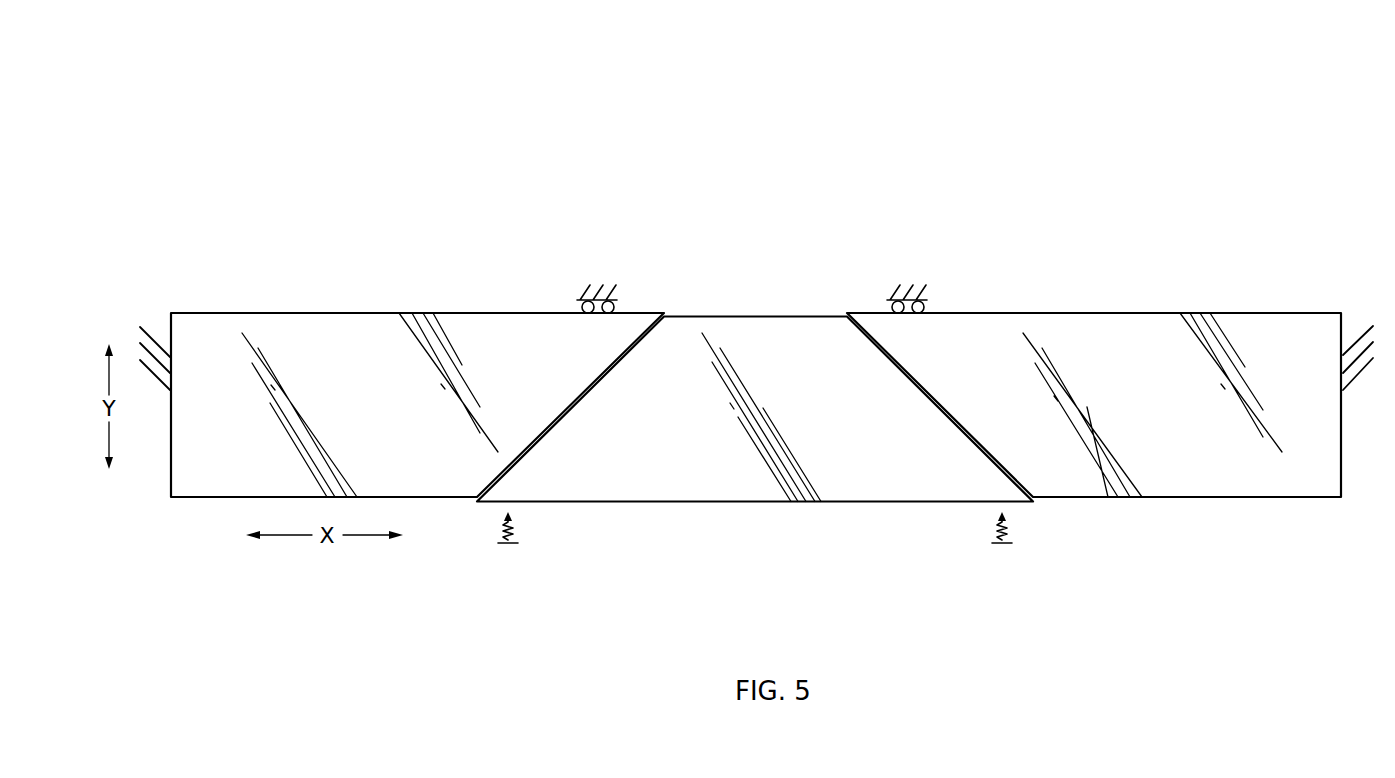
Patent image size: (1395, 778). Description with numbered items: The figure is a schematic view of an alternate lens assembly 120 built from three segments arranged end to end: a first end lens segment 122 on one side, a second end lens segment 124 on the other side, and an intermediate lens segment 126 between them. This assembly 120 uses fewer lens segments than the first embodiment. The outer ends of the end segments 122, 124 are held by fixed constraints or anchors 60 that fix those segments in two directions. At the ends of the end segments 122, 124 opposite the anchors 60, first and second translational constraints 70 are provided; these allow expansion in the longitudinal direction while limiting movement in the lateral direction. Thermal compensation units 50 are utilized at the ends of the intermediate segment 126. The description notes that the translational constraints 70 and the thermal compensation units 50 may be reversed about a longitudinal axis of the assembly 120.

The lens assembly 120 is at (387, 150).
The first end lens segment 122 is at (358, 342).
The second end lens segment 124 is at (1203, 488).
The intermediate lens segment 126 is at (788, 343).
The translational constraint 70 is at (606, 270).
The fixed support 60 is at (170, 328).
The thermal compensation unit 50 is at (511, 560).